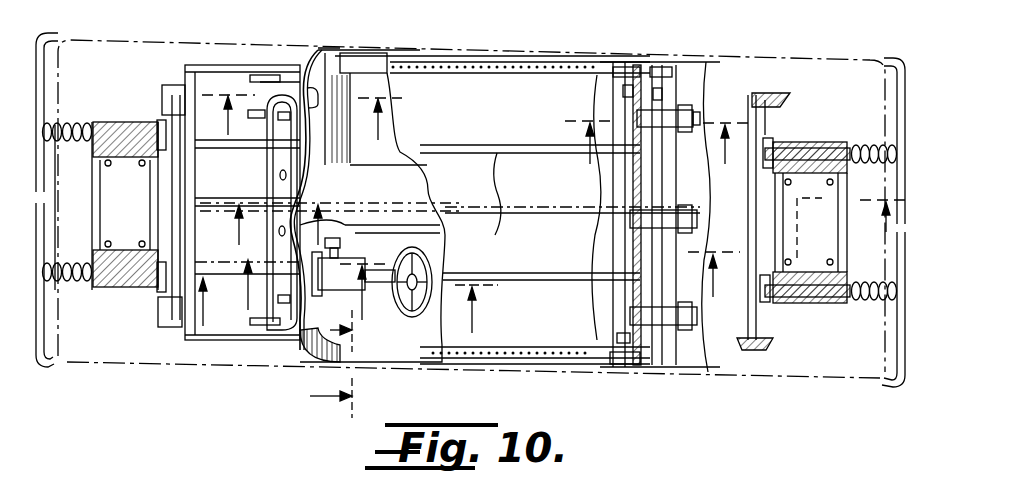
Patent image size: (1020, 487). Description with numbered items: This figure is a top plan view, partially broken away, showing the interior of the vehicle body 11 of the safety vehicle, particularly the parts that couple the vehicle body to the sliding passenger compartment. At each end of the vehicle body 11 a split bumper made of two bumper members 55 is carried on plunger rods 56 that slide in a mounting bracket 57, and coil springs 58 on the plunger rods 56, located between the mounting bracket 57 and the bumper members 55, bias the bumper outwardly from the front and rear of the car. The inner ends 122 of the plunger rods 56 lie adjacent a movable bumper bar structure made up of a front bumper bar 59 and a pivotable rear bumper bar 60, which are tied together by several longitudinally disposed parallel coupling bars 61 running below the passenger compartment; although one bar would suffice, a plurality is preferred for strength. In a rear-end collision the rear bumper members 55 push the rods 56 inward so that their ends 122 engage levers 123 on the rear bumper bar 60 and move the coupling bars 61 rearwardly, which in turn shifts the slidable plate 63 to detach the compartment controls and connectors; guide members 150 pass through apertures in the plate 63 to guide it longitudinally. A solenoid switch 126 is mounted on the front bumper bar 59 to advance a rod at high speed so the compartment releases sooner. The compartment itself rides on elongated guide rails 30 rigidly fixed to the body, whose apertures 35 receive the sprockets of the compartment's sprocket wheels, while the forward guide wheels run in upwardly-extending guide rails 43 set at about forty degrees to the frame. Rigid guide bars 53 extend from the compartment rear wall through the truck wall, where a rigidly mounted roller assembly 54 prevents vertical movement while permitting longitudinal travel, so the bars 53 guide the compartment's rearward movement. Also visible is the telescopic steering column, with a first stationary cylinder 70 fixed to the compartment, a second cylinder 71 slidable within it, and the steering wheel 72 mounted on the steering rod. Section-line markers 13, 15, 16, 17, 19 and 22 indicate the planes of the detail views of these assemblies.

The vehicle body 11 is at (140, 40).
The section line 13 is at (302, 106).
The section line 15 is at (330, 200).
The section line 16 is at (312, 278).
The section line 17 is at (656, 130).
The section line 19 is at (798, 236).
The section line 22 is at (346, 364).
The guide rails 30 is at (507, 58).
The apertures 35 is at (467, 62).
The upwardly-extending guide rails 43 is at (265, 76).
The rigid guide bars 53 is at (660, 62).
The roller assembly 54 is at (692, 196).
The bumper members 55 is at (40, 32).
The plunger rods 56 is at (125, 130).
The mounting bracket 57 is at (110, 203).
The coil springs 58 is at (63, 125).
The front bumper bar 59 is at (182, 190).
The pivotable rear bumper bar 60 is at (746, 214).
The coupling bars 61 is at (497, 195).
The slidable plate 63 is at (278, 163).
The first stationary cylinder 70 is at (392, 300).
The second cylinder 71 is at (380, 235).
The steering wheel 72 is at (408, 235).
The ends of plunger rods 122 is at (768, 148).
The levers 123 is at (753, 97).
The solenoid switch 126 is at (162, 92).
The guide members 150 is at (257, 112).